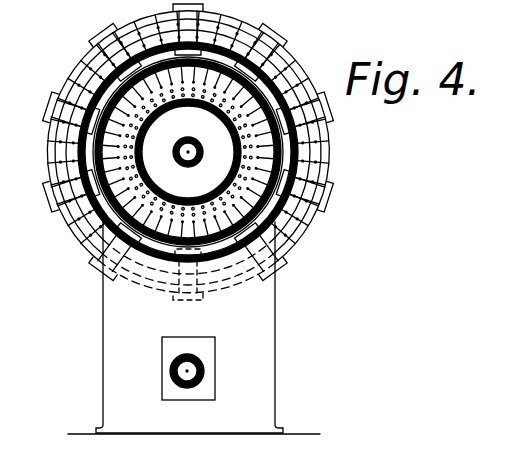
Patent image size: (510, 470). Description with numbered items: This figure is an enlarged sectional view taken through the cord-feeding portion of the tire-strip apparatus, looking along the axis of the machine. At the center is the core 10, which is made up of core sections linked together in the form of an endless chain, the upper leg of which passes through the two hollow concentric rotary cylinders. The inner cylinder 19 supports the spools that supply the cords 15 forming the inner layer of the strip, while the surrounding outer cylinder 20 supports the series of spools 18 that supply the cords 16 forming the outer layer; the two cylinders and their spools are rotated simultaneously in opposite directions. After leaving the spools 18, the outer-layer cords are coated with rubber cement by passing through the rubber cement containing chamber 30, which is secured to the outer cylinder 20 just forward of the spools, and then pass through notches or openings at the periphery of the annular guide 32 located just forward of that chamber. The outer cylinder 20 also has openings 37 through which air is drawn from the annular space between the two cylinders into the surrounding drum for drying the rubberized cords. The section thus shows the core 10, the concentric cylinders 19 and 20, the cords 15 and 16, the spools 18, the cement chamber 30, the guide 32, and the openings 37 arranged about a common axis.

The core 10 is at (197, 131).
The cords 15 is at (238, 157).
The cords 16 is at (288, 77).
The spools 18 is at (107, 32).
The inner cylinder 19 is at (221, 190).
The outer cylinder 20 is at (64, 204).
The rubber cement containing chamber 30 is at (64, 142).
The annular guide 32 is at (93, 55).
The openings 37 is at (272, 222).